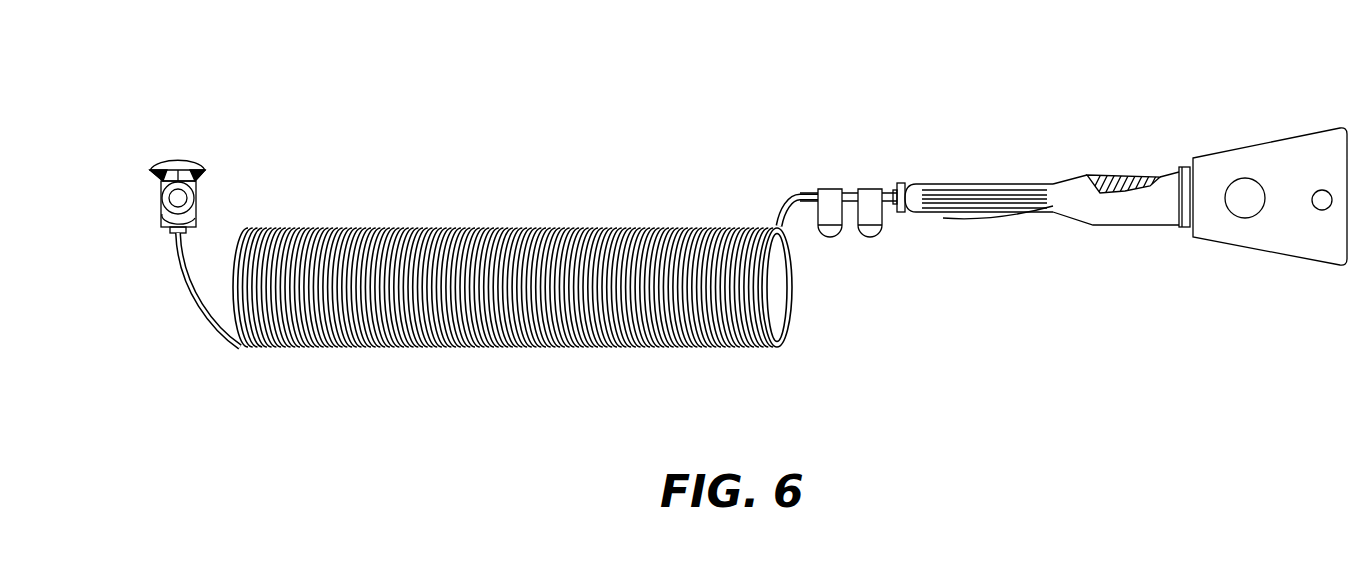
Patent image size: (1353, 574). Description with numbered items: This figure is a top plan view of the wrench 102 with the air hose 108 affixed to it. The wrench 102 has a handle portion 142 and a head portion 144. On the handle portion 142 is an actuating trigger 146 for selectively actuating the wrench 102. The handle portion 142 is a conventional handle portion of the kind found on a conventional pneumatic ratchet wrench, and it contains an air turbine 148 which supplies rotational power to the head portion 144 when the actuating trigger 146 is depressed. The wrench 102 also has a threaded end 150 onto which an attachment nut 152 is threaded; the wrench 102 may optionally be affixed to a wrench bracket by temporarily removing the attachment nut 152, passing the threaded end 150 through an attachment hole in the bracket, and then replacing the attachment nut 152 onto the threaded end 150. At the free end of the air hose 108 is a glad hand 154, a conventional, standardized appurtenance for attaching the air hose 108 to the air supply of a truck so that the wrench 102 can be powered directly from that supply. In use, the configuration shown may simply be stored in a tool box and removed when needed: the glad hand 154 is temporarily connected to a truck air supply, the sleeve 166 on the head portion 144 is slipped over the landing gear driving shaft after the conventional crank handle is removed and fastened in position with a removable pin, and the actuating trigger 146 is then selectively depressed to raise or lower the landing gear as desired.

The wrench 102 is at (1000, 103).
The air hose 108 is at (672, 232).
The handle portion 142 is at (1067, 217).
The head portion 144 is at (1267, 237).
The actuating trigger 146 is at (966, 220).
The air turbine 148 is at (1157, 170).
The threaded end 150 is at (897, 188).
The attachment nut 152 is at (900, 213).
The glad hand 154 is at (156, 184).
The sleeve 166 is at (1250, 178).